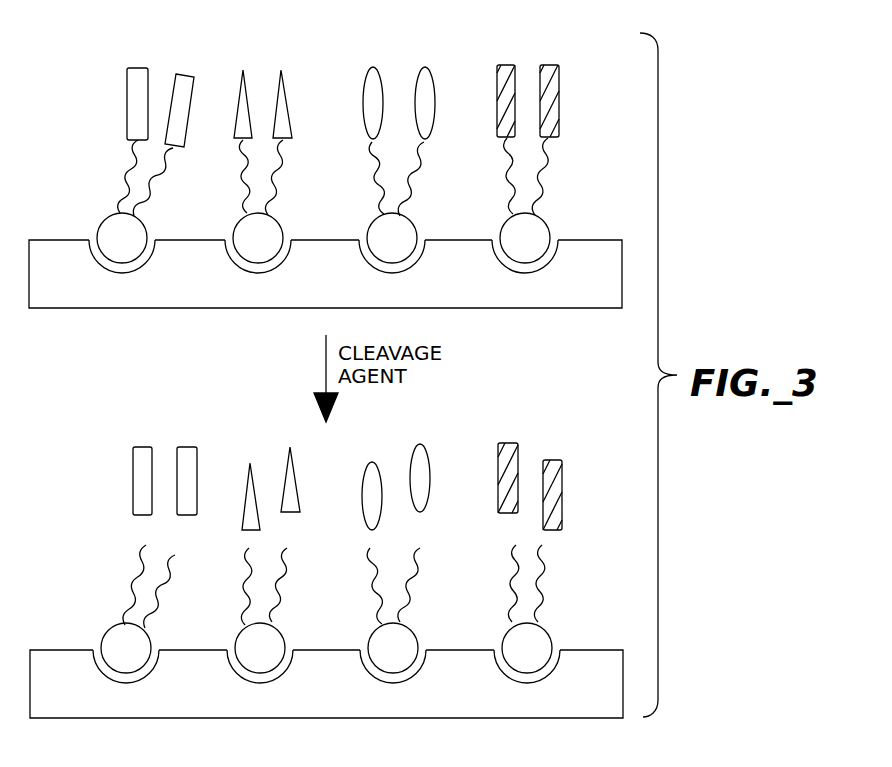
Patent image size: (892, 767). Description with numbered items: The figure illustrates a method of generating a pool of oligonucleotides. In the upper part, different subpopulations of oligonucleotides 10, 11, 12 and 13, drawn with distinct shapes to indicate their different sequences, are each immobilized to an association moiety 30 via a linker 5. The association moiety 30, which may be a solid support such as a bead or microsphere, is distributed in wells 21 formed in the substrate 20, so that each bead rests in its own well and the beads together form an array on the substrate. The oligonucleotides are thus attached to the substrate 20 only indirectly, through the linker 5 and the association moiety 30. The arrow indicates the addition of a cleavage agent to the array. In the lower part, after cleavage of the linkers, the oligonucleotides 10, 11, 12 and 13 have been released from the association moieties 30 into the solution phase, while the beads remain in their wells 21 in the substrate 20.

The linker 5 is at (139, 168).
The oligonucleotides 10 is at (184, 74).
The oligonucleotides 11 is at (281, 70).
The oligonucleotides 12 is at (425, 67).
The oligonucleotides 13 is at (549, 65).
The substrate 20 is at (84, 239).
The wells 21 is at (154, 238).
The association moiety 30 is at (112, 216).